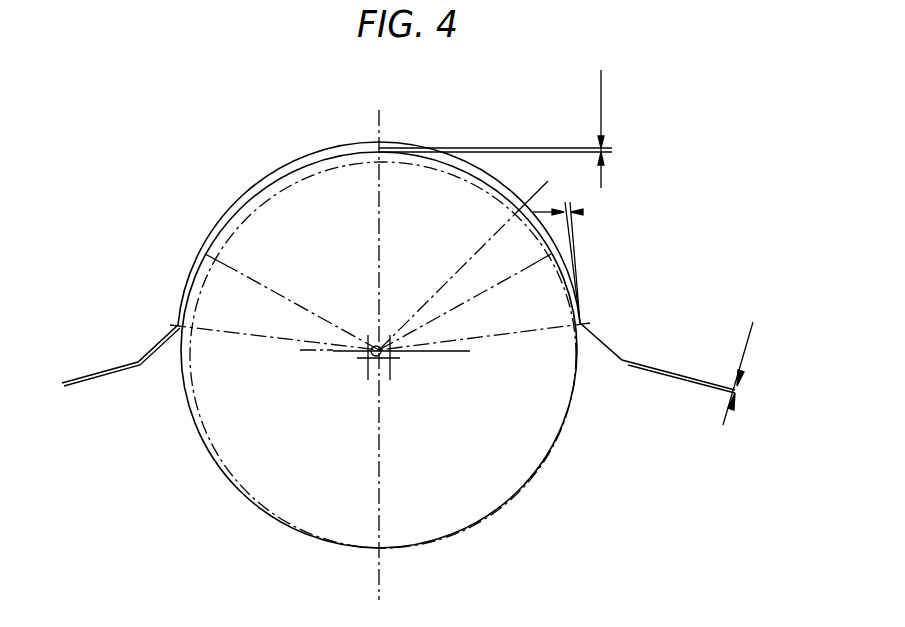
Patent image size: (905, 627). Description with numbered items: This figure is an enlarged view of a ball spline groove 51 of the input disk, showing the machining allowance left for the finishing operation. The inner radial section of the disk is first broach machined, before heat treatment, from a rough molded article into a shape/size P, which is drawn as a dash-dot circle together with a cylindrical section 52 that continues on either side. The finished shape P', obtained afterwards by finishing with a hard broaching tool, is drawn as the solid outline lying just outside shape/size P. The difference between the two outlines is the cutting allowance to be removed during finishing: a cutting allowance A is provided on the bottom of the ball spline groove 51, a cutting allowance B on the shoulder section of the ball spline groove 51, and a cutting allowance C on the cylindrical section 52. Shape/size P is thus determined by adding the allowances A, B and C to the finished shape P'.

The ball spline groove 51 is at (212, 243).
The cylindrical section 52 is at (669, 373).
The shape/size before finishing P is at (383, 355).
The finished shape P' is at (379, 227).
The cutting allowance on groove bottom A is at (609, 129).
The cutting allowance on groove shoulder B is at (583, 212).
The cutting allowance on cylindrical section C is at (738, 370).